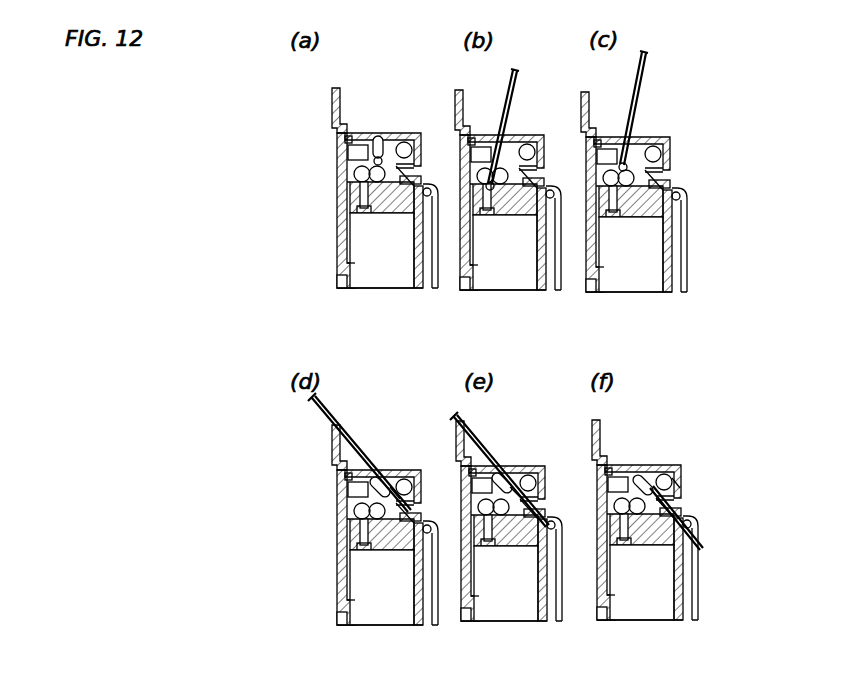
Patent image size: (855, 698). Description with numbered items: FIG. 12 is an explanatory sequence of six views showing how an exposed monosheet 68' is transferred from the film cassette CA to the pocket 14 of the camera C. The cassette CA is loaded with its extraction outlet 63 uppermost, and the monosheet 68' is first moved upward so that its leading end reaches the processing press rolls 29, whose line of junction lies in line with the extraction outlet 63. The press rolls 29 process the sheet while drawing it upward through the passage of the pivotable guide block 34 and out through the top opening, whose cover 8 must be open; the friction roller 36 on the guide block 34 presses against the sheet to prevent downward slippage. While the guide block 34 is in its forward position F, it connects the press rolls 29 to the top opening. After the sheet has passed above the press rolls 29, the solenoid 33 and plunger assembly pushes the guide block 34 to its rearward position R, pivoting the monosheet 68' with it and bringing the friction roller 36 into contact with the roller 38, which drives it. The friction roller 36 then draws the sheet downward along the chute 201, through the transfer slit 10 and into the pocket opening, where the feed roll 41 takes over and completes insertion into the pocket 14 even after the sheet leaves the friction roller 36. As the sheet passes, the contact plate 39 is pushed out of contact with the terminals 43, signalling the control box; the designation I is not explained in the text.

The cover 8 is at (333, 93).
The transfer slit 10 is at (417, 290).
The pocket 14 is at (436, 290).
The processing press rolls 29 is at (356, 182).
The solenoid 33 is at (347, 150).
The guide block 34 is at (360, 144).
The friction roller 36 is at (402, 505).
The roller 38 is at (403, 141).
The contact plate 39 is at (416, 165).
The feed roll 41 is at (418, 182).
The terminals 43 is at (386, 150).
The extraction outlet 63 is at (352, 250).
The monosheet 68' is at (516, 323).
The chute 201 is at (404, 192).
The forward position F is at (344, 157).
The rearward position R is at (390, 487).
The camera C is at (345, 290).
The film cassette CA is at (350, 272).
The position I is at (392, 280).